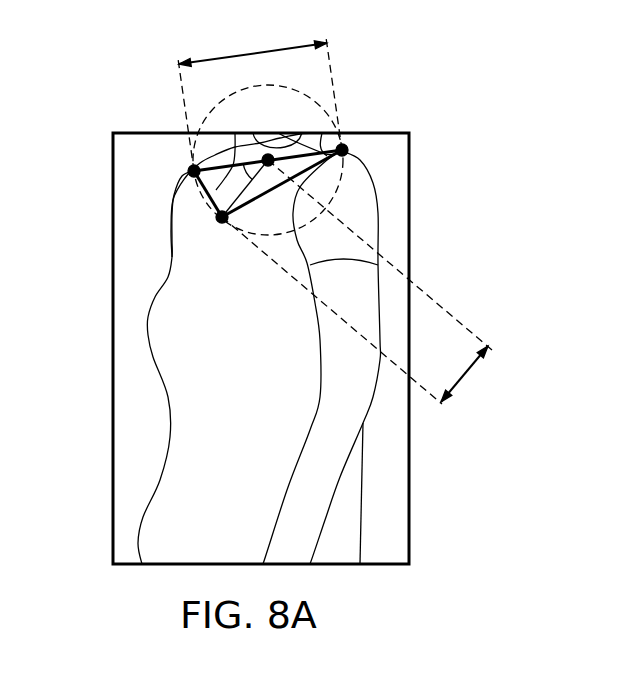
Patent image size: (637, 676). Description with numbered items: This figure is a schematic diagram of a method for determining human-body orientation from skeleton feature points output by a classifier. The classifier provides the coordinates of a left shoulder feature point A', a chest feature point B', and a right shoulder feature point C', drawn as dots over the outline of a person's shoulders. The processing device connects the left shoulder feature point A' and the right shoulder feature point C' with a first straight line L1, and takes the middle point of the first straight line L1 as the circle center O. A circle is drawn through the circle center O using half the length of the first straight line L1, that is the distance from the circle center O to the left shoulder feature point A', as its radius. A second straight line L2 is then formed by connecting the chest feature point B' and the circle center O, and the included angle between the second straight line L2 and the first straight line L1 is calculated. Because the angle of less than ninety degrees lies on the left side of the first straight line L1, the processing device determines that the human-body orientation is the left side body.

The left shoulder feature point A' is at (196, 183).
The chest feature point B' is at (196, 218).
The right shoulder feature point C' is at (406, 173).
The circle center O is at (271, 156).
The first straight line L1 is at (260, 95).
The second straight line L2 is at (357, 282).